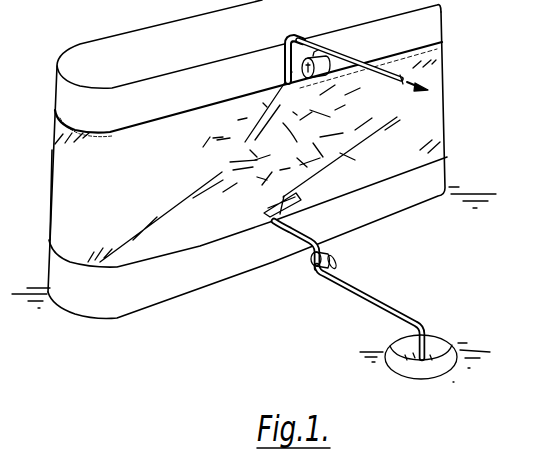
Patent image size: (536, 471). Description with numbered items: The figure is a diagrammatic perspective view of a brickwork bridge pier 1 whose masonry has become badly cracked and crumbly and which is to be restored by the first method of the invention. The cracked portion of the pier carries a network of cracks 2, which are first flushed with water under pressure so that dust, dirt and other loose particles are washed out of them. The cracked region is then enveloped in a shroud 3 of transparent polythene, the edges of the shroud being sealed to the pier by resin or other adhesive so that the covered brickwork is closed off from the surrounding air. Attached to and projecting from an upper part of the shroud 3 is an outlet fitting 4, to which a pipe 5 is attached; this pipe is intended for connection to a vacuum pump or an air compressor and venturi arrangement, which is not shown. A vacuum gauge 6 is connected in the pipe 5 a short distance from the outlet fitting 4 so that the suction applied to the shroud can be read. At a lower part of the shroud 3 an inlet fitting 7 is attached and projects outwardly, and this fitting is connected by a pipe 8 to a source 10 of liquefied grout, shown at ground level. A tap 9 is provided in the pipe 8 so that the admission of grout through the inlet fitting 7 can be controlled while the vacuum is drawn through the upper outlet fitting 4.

The bridge pier 1 is at (104, 320).
The cracks 2 is at (346, 97).
The shroud 3 is at (62, 197).
The outlet fitting 4 is at (280, 80).
The pipe 5 is at (367, 60).
The vacuum gauge 6 is at (333, 57).
The inlet fitting 7 is at (276, 217).
The pipe 8 is at (373, 300).
The tap 9 is at (336, 259).
The source of liquefied grout 10 is at (441, 352).